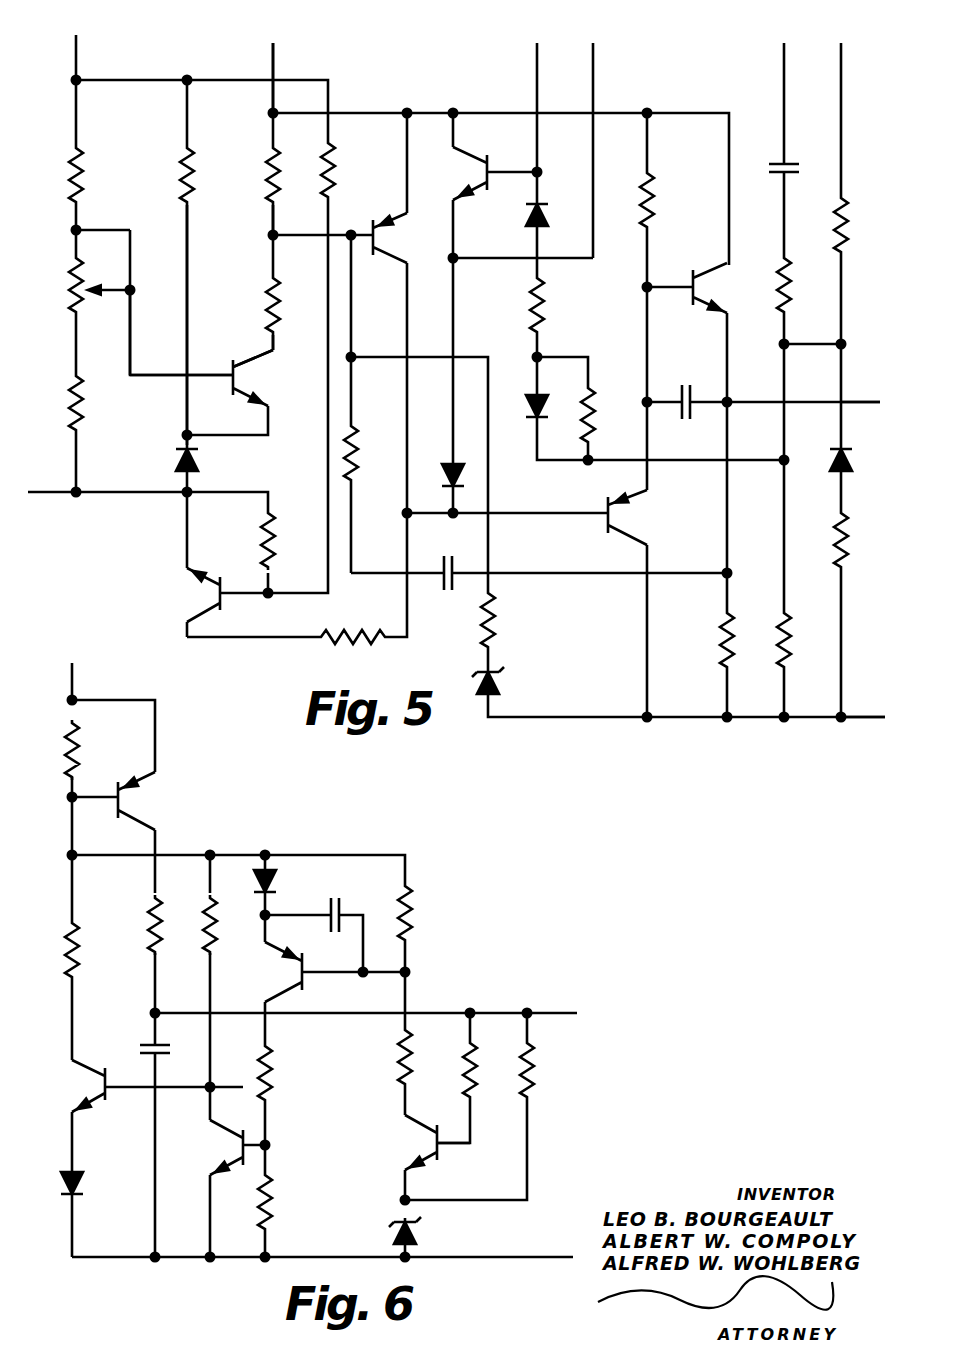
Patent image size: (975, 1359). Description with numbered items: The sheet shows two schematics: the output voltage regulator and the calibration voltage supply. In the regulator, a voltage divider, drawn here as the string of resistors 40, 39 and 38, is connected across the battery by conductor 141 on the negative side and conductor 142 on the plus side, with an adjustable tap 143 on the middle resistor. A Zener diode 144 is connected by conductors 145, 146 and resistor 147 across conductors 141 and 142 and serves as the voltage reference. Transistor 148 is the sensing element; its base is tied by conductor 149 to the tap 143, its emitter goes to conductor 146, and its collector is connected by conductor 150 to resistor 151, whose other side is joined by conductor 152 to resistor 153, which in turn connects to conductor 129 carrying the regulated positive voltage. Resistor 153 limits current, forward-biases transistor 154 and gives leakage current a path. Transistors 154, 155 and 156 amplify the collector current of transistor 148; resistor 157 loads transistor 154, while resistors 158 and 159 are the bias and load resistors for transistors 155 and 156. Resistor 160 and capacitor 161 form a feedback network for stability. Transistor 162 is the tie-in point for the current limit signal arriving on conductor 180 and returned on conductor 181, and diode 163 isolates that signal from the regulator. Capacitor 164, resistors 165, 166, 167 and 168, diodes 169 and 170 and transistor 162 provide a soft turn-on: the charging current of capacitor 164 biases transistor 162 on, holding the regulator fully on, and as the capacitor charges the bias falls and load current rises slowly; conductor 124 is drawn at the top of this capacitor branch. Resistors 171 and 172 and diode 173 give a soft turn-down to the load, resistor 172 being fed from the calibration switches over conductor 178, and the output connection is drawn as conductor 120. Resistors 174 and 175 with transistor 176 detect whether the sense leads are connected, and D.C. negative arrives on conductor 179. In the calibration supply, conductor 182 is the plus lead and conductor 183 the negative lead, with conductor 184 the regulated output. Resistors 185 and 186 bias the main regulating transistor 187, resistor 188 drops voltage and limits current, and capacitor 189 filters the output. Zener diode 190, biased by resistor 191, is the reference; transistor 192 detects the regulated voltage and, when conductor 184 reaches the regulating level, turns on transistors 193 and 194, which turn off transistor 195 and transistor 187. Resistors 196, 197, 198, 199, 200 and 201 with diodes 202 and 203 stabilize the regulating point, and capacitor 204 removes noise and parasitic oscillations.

In FIG. 5, the conductor 142 is at (80, 52).
In FIG. 5, the conductor 129 is at (276, 52).
In FIG. 5, the conductor 180 is at (537, 50).
In FIG. 5, the conductor 181 is at (593, 55).
In FIG. 5, the terminal 124 is at (784, 50).
In FIG. 5, the conductor 178 is at (848, 34).
In FIG. 5, the resistor 40 is at (76, 182).
In FIG. 5, the resistor 147 is at (187, 190).
In FIG. 5, the resistor 153 is at (273, 204).
In FIG. 5, the resistor 175 is at (328, 176).
In FIG. 5, the potentiometer 39 is at (76, 290).
In FIG. 5, the adjustable tap 143 is at (109, 296).
In FIG. 5, the conductor 149 is at (126, 364).
In FIG. 5, the resistor 38 is at (76, 420).
In FIG. 5, the conductor 152 is at (273, 220).
In FIG. 5, the conductor 146 is at (187, 264).
In FIG. 5, the resistor 151 is at (273, 300).
In FIG. 5, the conductor 150 is at (273, 337).
In FIG. 5, the transistor 148 is at (240, 376).
In FIG. 5, the Zener diode 144 is at (186, 442).
In FIG. 5, the conductor 145 is at (186, 472).
In FIG. 5, the conductor 141 is at (29, 494).
In FIG. 5, the resistor 174 is at (268, 526).
In FIG. 5, the transistor 176 is at (226, 605).
In FIG. 5, the resistor 157 is at (358, 637).
In FIG. 5, the resistor 160 is at (352, 448).
In FIG. 5, the transistor 154 is at (378, 240).
In FIG. 5, the transistor 162 is at (478, 132).
In FIG. 5, the diode 170 is at (534, 216).
In FIG. 5, the resistor 168 is at (545, 310).
In FIG. 5, the diode 169 is at (530, 400).
In FIG. 5, the resistor 167 is at (588, 405).
In FIG. 5, the diode 163 is at (466, 472).
In FIG. 5, the capacitor 161 is at (454, 560).
In FIG. 5, the transistor 155 is at (624, 517).
In FIG. 5, the transistor 156 is at (712, 313).
In FIG. 5, the resistor 158 is at (652, 186).
In FIG. 5, the resistor 165 is at (784, 268).
In FIG. 5, the capacitor 164 is at (778, 162).
In FIG. 5, the resistor 172 is at (845, 206).
In FIG. 5, the output terminal 120 is at (878, 402).
In FIG. 5, the diode 173 is at (850, 462).
In FIG. 5, the resistor 171 is at (847, 548).
In FIG. 5, the resistor 159 is at (722, 640).
In FIG. 5, the resistor 166 is at (792, 645).
In FIG. 5, the conductor 179 is at (880, 695).
In FIG. 6, the conductor 182 is at (78, 675).
In FIG. 6, the resistor 185 is at (76, 736).
In FIG. 6, the transistor 187 is at (142, 818).
In FIG. 6, the resistor 188 is at (155, 906).
In FIG. 6, the resistor 186 is at (74, 970).
In FIG. 6, the resistor 201 is at (210, 945).
In FIG. 6, the capacitor 189 is at (142, 1045).
In FIG. 6, the transistor 195 is at (100, 1113).
In FIG. 6, the transistor 194 is at (243, 1148).
In FIG. 6, the diode 203 is at (82, 1196).
In FIG. 6, the resistor 200 is at (268, 1198).
In FIG. 6, the resistor 199 is at (270, 1078).
In FIG. 6, the resistor 197 is at (405, 1058).
In FIG. 6, the transistor 193 is at (304, 978).
In FIG. 6, the diode 202 is at (276, 860).
In FIG. 6, the capacitor 204 is at (332, 870).
In FIG. 6, the resistor 198 is at (406, 932).
In FIG. 6, the conductor 184 is at (552, 1013).
In FIG. 6, the resistor 191 is at (530, 1063).
In FIG. 6, the resistor 196 is at (476, 1078).
In FIG. 6, the transistor 192 is at (438, 1157).
In FIG. 6, the Zener diode 190 is at (416, 1228).
In FIG. 6, the conductor 183 is at (555, 1225).